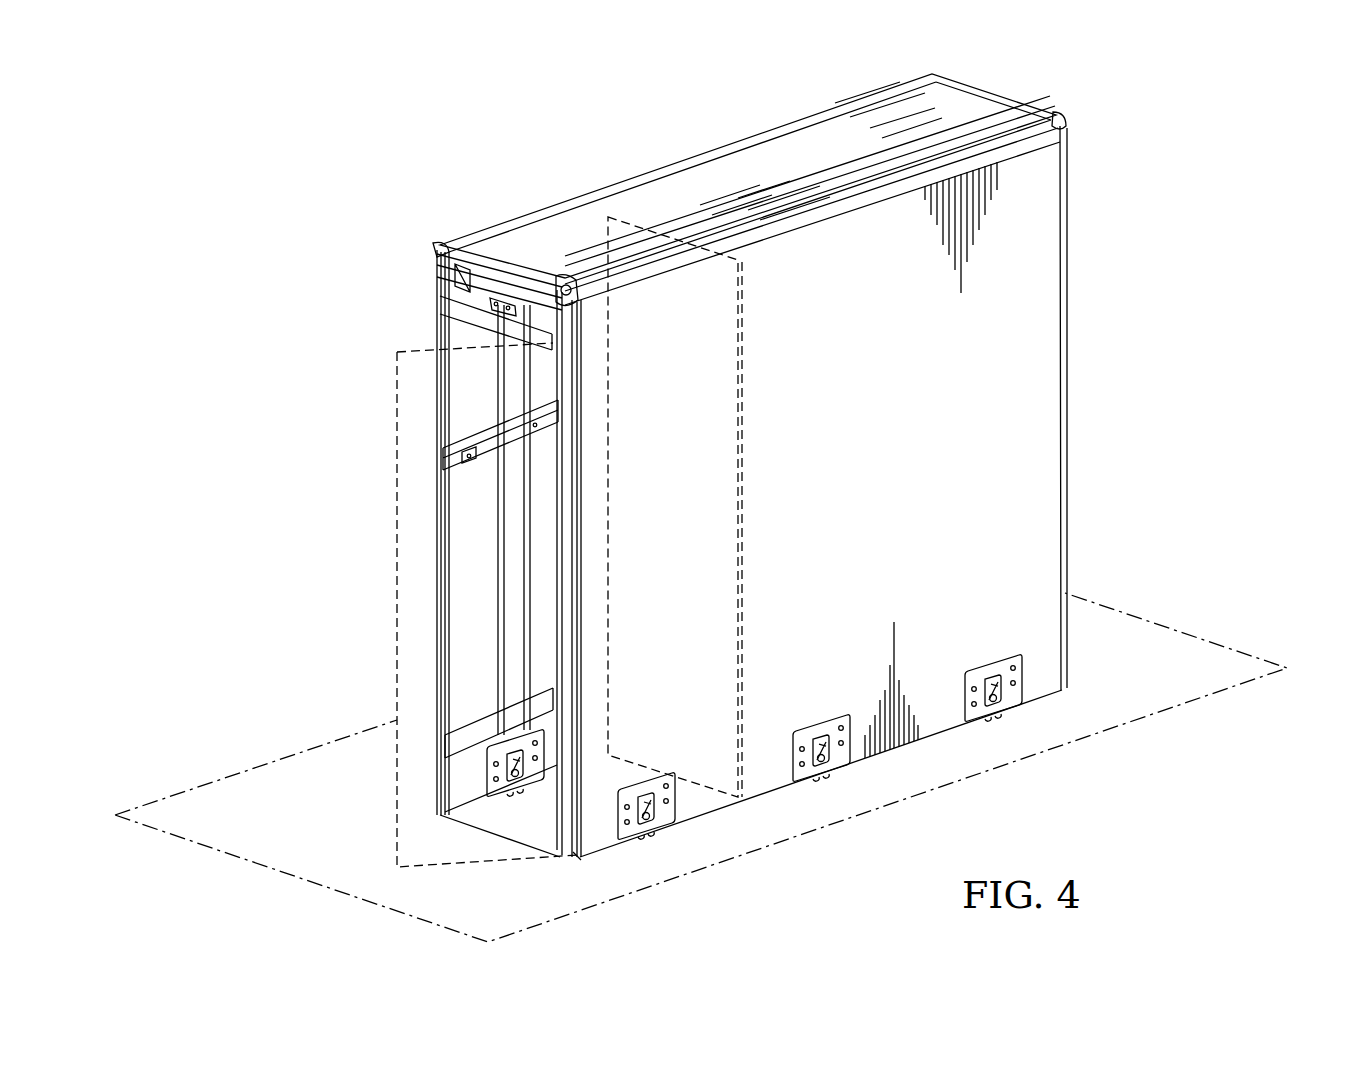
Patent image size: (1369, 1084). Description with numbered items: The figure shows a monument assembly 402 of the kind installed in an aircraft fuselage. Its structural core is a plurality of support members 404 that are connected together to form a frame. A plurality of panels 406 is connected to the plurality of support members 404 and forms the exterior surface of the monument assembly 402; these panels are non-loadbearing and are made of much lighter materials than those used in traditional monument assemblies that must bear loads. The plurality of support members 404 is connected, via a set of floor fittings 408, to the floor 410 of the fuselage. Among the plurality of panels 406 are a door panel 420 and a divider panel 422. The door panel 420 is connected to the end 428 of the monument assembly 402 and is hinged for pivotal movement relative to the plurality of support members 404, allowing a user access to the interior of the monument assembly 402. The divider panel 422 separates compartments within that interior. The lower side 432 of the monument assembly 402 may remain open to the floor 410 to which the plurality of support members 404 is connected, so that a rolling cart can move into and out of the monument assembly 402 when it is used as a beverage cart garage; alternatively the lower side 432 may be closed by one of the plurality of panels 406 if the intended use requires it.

The monument assembly 402 is at (511, 93).
The plurality of support members 404 is at (470, 433).
The plurality of panels 406 is at (782, 150).
The set of floor fittings 408 is at (655, 836).
The floor 410 is at (216, 779).
The door panel 420 is at (397, 388).
The divider panel 422 is at (748, 343).
The end 428 is at (508, 203).
The lower side 432 is at (580, 884).